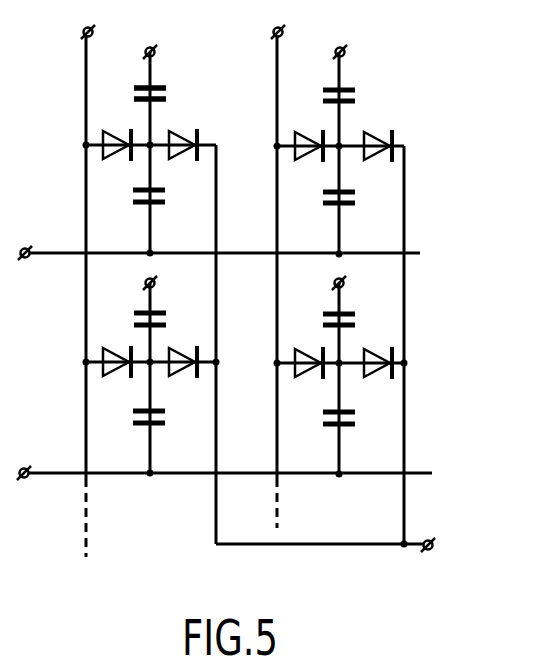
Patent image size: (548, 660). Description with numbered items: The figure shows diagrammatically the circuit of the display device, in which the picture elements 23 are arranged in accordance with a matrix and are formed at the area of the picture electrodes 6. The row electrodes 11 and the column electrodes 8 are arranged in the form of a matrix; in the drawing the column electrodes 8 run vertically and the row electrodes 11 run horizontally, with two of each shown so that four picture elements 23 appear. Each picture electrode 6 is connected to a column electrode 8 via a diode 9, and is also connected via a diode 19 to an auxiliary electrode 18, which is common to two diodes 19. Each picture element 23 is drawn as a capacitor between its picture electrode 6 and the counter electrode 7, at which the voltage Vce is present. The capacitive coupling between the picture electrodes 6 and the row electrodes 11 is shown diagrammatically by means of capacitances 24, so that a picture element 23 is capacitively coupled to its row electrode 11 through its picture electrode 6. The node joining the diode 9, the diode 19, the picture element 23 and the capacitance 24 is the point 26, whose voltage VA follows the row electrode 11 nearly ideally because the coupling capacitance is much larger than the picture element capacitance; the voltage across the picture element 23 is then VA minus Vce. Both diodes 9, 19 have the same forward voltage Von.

The picture electrode 6 is at (166, 102).
The counter electrode 7 is at (165, 84).
The column electrode 8 is at (95, 35).
The diode 9 is at (111, 131).
The row electrode 11 is at (44, 251).
The auxiliary electrode 18 is at (416, 548).
The diode 19 is at (200, 144).
The picture element 23 is at (168, 96).
The capacitance 24 is at (167, 197).
The point 26 is at (149, 149).